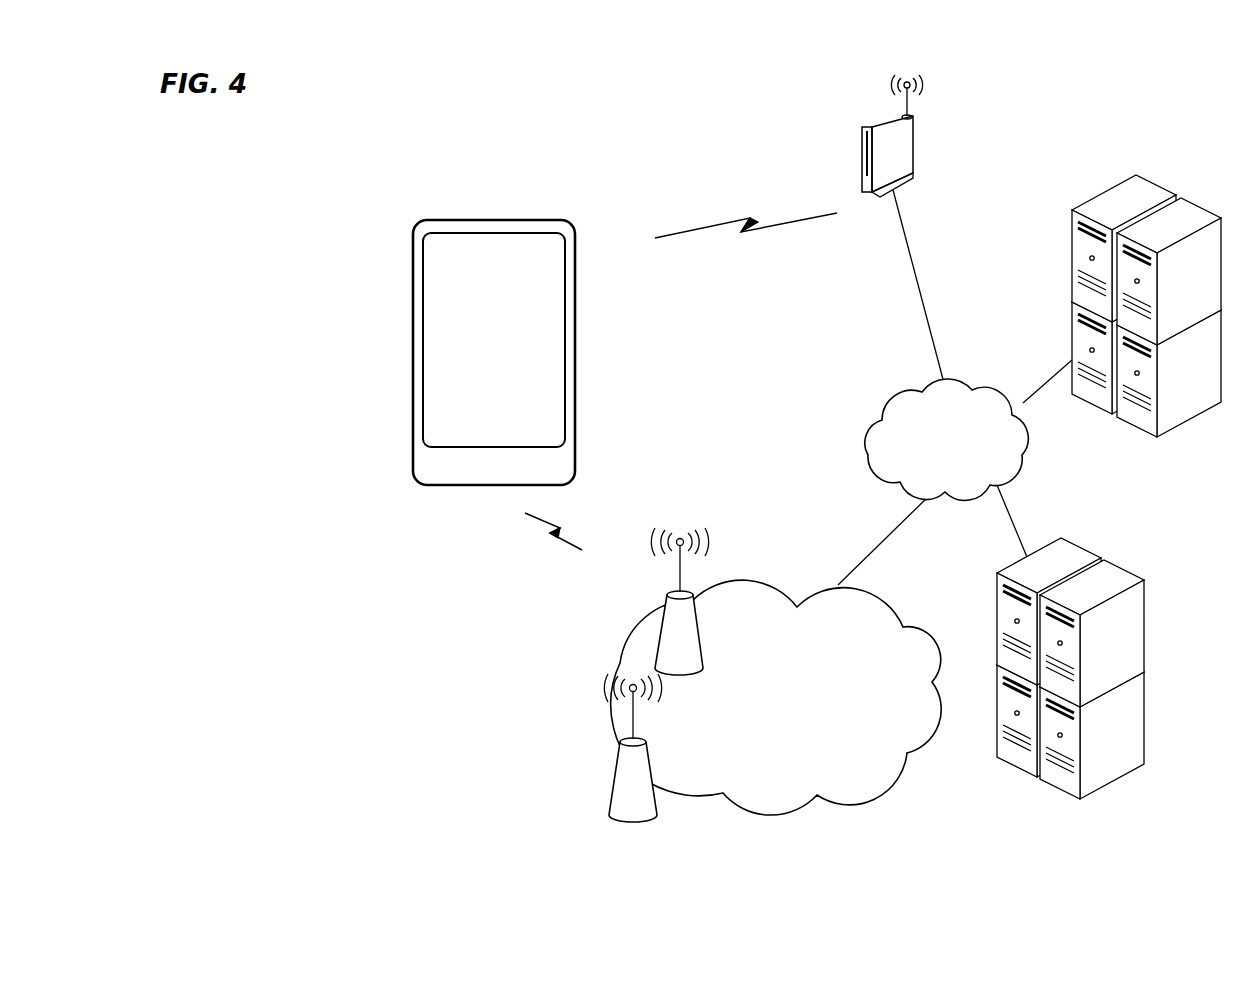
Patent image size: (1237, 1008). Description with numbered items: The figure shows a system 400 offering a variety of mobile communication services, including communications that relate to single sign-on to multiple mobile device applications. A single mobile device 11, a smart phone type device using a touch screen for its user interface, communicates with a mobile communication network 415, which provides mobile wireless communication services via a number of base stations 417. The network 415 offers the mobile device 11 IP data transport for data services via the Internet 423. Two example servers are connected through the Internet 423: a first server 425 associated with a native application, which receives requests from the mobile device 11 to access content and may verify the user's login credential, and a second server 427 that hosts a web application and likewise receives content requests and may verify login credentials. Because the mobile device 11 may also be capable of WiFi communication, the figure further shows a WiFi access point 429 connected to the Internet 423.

The system 400 is at (364, 190).
The mobile device 11 is at (413, 337).
The WiFi access point 429 is at (862, 155).
The Internet 423 is at (890, 483).
The mobile communication network 415 is at (757, 583).
The base stations 417 is at (663, 616).
The first server 425 is at (1072, 337).
The second server 427 is at (995, 617).